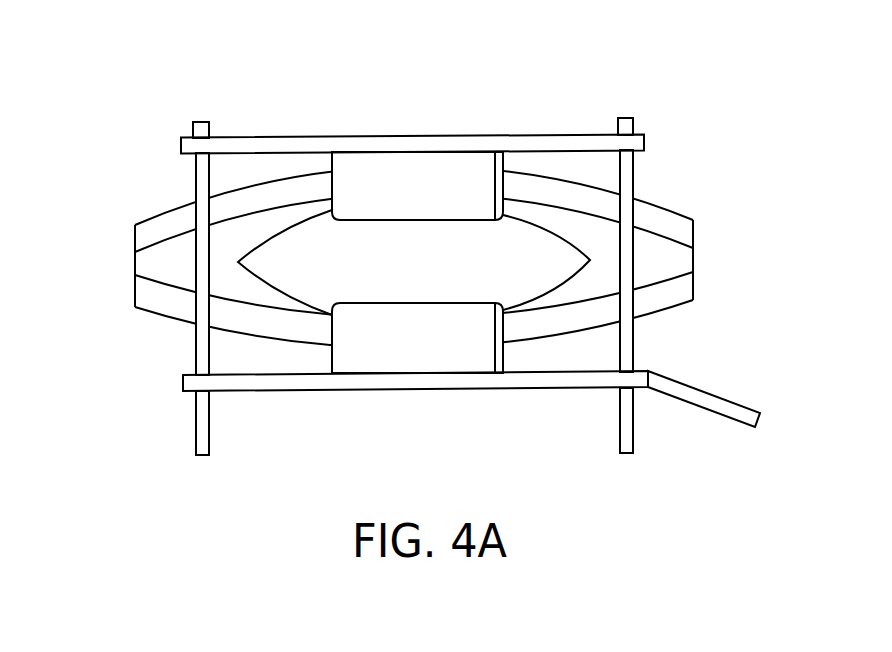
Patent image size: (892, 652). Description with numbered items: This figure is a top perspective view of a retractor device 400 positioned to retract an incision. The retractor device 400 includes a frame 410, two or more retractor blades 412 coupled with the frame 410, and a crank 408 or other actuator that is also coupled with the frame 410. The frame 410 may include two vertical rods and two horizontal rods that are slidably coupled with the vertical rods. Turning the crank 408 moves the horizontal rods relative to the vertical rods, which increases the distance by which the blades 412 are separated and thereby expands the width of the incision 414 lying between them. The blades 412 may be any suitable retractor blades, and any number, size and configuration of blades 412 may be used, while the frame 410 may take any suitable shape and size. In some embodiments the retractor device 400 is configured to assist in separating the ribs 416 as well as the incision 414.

The retractor device 400 is at (255, 68).
The crank 408 is at (715, 388).
The frame 410 is at (586, 128).
The retractor blades 412 is at (455, 355).
The incision 414 is at (286, 303).
The ribs 416 is at (156, 212).